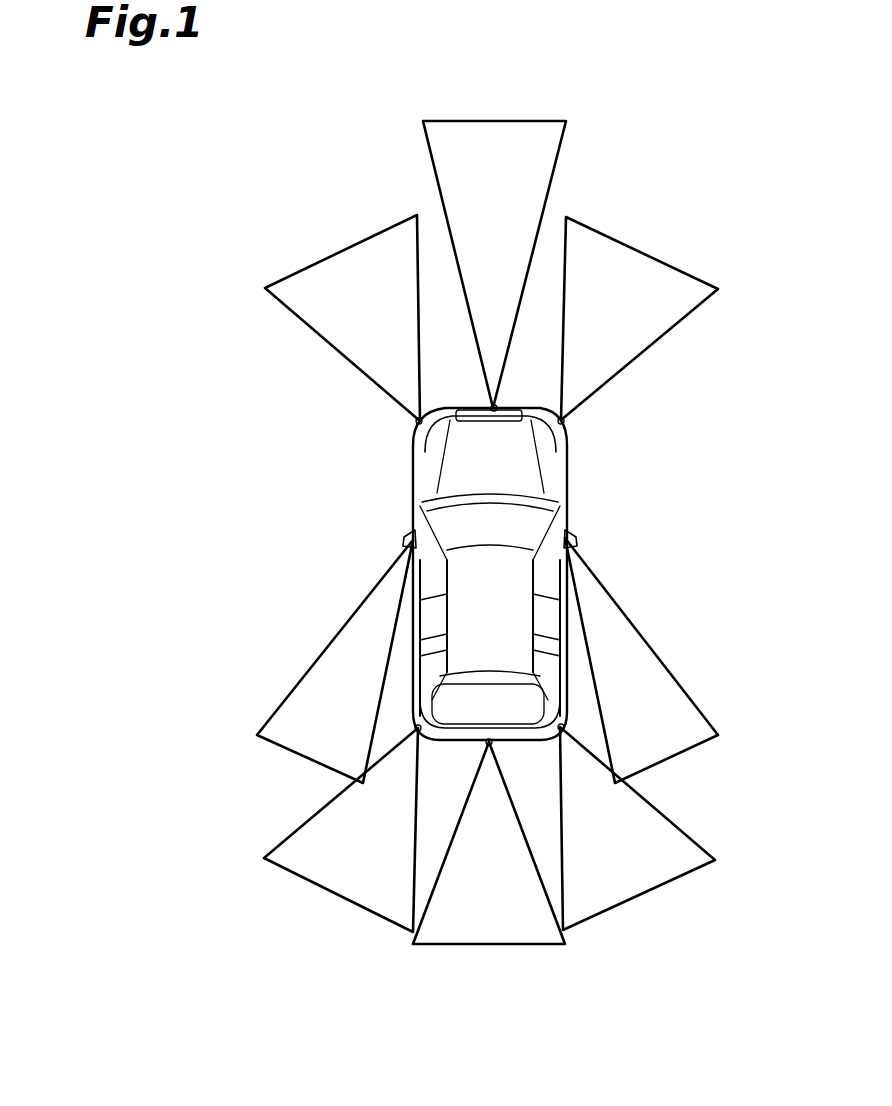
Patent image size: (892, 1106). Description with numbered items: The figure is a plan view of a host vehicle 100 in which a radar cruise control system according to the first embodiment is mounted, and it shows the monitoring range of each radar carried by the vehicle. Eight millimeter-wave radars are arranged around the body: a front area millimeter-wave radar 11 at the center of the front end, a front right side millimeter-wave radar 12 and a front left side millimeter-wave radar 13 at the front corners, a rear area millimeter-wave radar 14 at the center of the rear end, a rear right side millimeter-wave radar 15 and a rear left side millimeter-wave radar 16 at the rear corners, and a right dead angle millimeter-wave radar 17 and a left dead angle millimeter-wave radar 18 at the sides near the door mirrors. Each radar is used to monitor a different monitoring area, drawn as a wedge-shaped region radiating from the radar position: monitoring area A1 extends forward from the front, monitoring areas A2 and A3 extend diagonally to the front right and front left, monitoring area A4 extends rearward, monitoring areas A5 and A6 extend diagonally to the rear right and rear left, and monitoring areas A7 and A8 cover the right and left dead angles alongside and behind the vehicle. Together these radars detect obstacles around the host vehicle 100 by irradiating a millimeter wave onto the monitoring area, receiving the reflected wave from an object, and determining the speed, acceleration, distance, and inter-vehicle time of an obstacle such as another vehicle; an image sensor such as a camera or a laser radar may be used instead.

The host vehicle 100 is at (548, 600).
The front area millimeter-wave radar 11 is at (495, 406).
The front right side millimeter-wave radar 12 is at (562, 422).
The front left side millimeter-wave radar 13 is at (418, 423).
The rear area millimeter-wave radar 14 is at (490, 745).
The rear right side millimeter-wave radar 15 is at (568, 728).
The rear left side millimeter-wave radar 16 is at (410, 728).
The right dead angle millimeter-wave radar 17 is at (572, 540).
The left dead angle millimeter-wave radar 18 is at (408, 540).
The monitoring area A1 is at (493, 127).
The monitoring area A2 is at (646, 262).
The monitoring area A3 is at (345, 262).
The monitoring area A4 is at (494, 935).
The monitoring area A5 is at (645, 886).
The monitoring area A6 is at (342, 886).
The monitoring area A7 is at (672, 752).
The monitoring area A8 is at (308, 752).